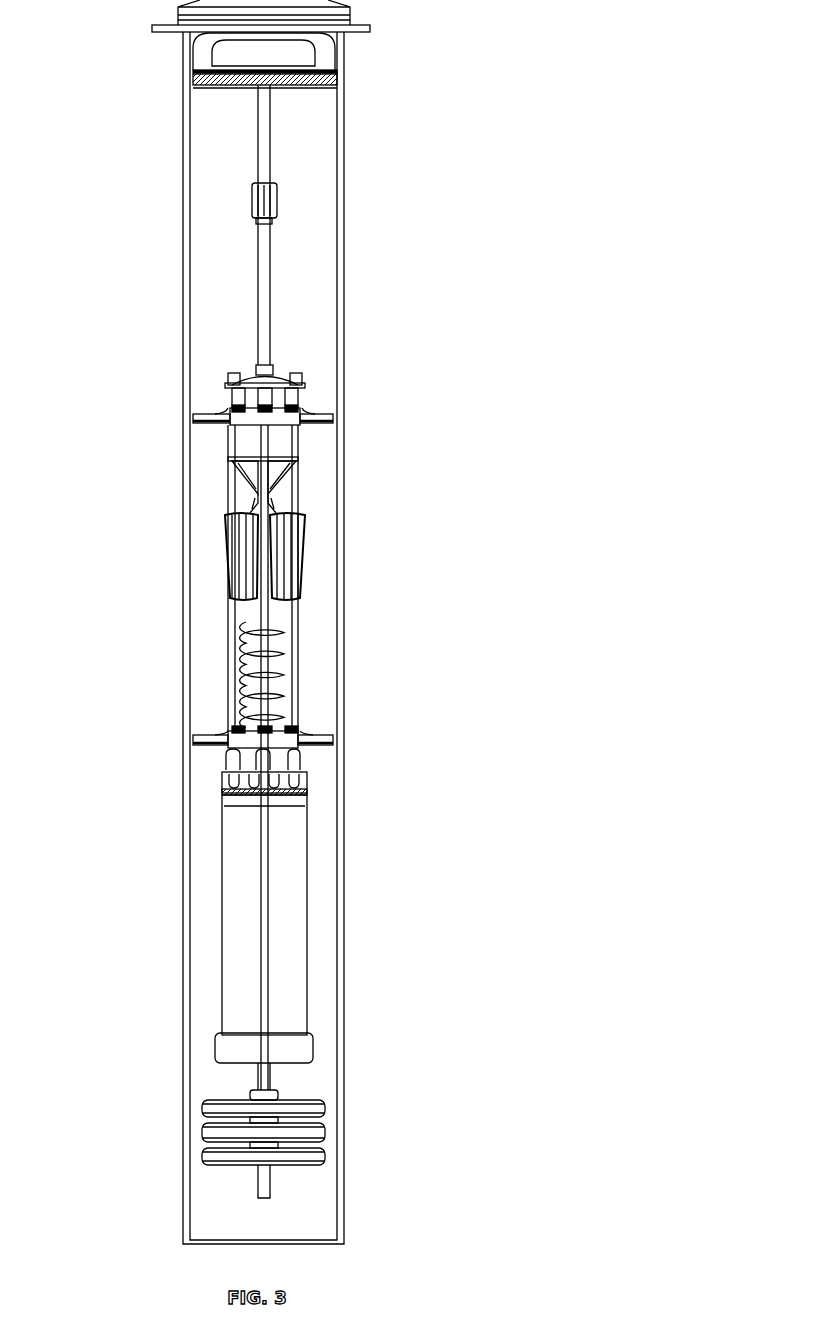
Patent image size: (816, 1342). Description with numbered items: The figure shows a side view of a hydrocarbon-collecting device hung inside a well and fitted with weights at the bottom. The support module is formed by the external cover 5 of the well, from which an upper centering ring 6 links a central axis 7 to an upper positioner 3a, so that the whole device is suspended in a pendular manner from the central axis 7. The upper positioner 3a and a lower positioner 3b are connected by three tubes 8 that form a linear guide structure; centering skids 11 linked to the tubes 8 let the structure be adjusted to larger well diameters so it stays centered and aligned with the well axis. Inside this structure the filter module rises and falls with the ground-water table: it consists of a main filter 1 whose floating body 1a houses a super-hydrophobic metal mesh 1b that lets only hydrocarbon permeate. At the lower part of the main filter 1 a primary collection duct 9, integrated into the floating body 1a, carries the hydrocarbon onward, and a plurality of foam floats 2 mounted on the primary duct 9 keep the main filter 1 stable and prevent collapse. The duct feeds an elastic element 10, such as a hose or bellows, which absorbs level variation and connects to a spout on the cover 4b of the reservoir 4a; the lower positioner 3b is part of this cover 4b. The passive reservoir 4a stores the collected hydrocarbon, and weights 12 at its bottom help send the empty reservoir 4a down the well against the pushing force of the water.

The main filter 1 is at (316, 463).
The floating body 1a is at (228, 458).
The metal mesh 1b is at (252, 472).
The floats 2 is at (233, 537).
The upper positioner 3a is at (322, 398).
The lower positioner 3b is at (191, 729).
The reservoir 4a is at (297, 965).
The cover 4b is at (300, 785).
The external cover 5 is at (187, 5).
The upper centering ring 6 is at (337, 70).
The central axis 7 is at (268, 293).
The tubes 8 is at (295, 645).
The primary collection duct 9 is at (272, 495).
The elastic element 10 is at (248, 687).
The centering skids 11 is at (207, 412).
The weights 12 is at (315, 1133).